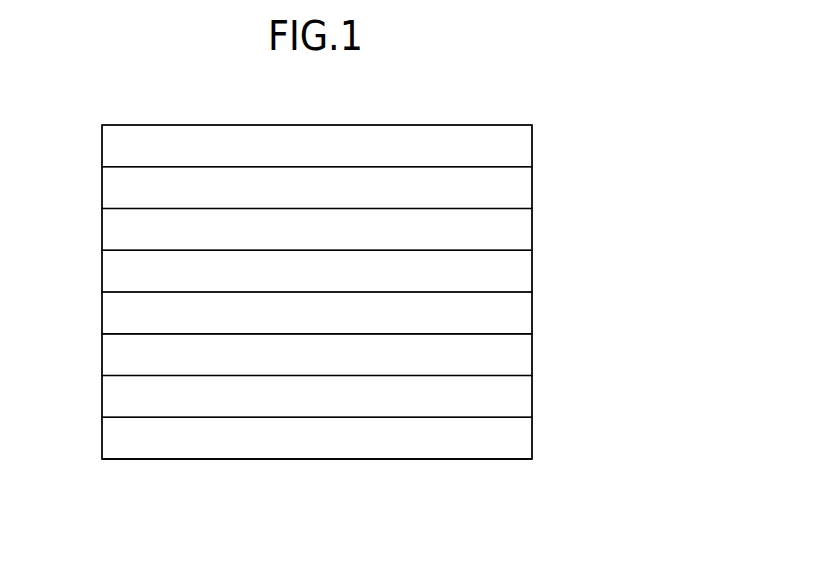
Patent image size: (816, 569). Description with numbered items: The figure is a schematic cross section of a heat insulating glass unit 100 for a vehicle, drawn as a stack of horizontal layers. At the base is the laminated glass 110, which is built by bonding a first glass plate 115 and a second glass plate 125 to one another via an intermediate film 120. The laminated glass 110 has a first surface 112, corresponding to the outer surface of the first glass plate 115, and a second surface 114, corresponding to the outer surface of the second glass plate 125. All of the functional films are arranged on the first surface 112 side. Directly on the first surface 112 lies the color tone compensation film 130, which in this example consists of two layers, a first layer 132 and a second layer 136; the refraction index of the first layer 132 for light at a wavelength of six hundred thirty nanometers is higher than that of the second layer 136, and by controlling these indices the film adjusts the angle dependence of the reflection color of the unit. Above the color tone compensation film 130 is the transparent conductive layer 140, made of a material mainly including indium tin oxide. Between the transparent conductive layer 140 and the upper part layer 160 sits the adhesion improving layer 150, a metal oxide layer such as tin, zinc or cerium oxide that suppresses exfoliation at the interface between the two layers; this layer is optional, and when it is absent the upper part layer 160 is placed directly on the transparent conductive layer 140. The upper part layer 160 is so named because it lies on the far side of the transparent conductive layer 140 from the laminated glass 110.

The heat insulating glass unit 100 is at (660, 105).
The laminated glass 110 is at (381, 396).
The first surface 112 is at (134, 332).
The second surface 114 is at (134, 463).
The first glass plate 115 is at (521, 355).
The intermediate film 120 is at (521, 397).
The second glass plate 125 is at (350, 438).
The color tone compensation film 130 is at (381, 292).
The first layer 132 is at (350, 313).
The second layer 136 is at (521, 271).
The transparent conductive layer 140 is at (520, 230).
The adhesion improving layer 150 is at (520, 188).
The upper part layer 160 is at (520, 146).